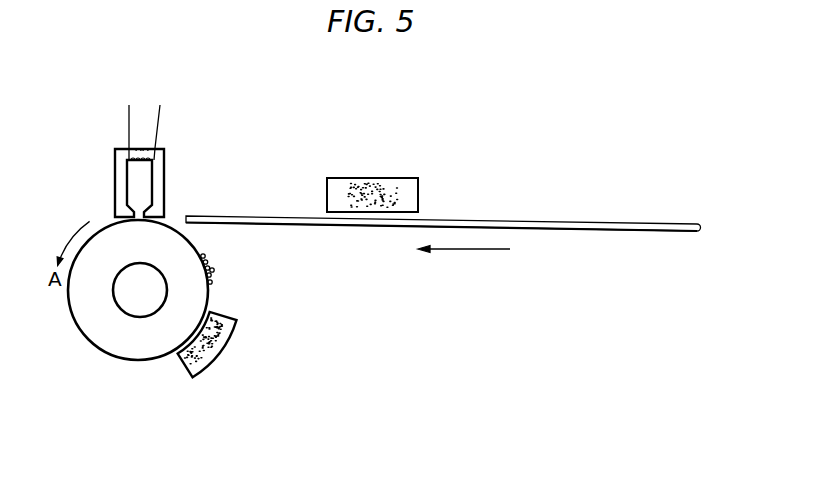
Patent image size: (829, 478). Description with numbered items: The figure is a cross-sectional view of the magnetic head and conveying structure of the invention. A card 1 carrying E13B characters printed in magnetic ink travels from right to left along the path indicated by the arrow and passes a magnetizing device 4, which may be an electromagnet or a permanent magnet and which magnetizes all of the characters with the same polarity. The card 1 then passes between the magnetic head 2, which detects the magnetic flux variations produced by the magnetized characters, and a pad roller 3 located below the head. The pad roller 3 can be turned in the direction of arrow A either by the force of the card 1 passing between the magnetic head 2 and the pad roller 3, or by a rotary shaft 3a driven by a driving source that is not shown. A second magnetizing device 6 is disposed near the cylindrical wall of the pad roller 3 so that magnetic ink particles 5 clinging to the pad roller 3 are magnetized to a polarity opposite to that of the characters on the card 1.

The card 1 is at (552, 230).
The magnetic head 2 is at (164, 172).
The pad roller 3 is at (108, 343).
The rotary shaft 3a is at (122, 297).
The magnetizing device 4 is at (379, 178).
The magnetic ink particles 5 is at (214, 270).
The magnetizing device 6 is at (222, 352).